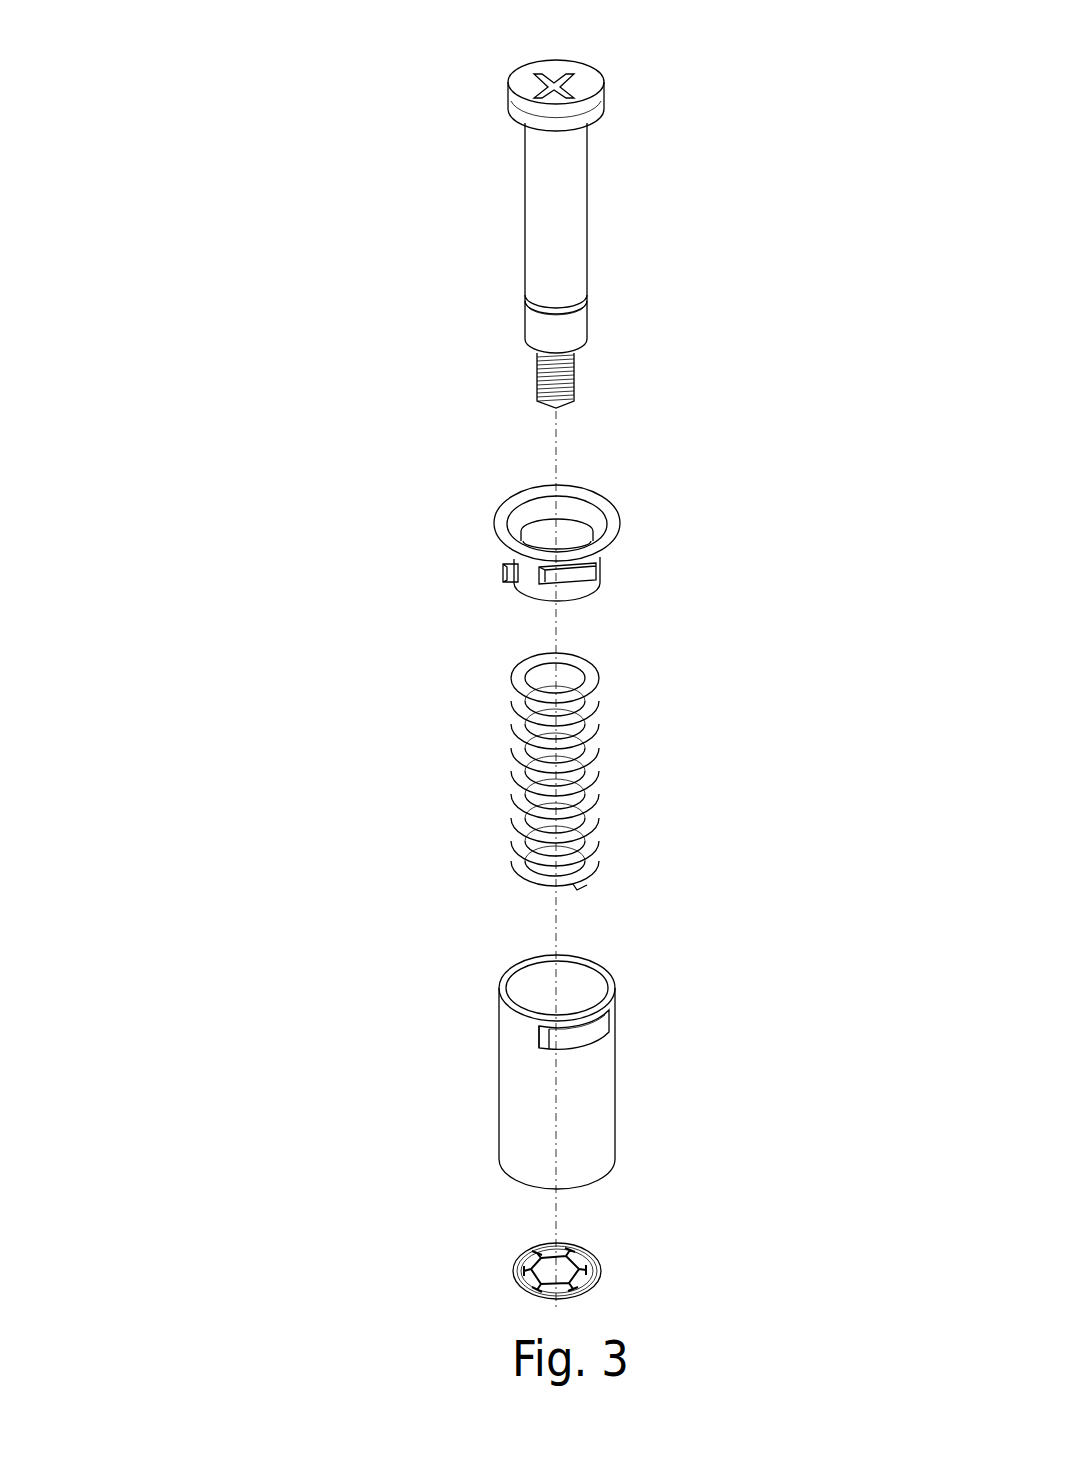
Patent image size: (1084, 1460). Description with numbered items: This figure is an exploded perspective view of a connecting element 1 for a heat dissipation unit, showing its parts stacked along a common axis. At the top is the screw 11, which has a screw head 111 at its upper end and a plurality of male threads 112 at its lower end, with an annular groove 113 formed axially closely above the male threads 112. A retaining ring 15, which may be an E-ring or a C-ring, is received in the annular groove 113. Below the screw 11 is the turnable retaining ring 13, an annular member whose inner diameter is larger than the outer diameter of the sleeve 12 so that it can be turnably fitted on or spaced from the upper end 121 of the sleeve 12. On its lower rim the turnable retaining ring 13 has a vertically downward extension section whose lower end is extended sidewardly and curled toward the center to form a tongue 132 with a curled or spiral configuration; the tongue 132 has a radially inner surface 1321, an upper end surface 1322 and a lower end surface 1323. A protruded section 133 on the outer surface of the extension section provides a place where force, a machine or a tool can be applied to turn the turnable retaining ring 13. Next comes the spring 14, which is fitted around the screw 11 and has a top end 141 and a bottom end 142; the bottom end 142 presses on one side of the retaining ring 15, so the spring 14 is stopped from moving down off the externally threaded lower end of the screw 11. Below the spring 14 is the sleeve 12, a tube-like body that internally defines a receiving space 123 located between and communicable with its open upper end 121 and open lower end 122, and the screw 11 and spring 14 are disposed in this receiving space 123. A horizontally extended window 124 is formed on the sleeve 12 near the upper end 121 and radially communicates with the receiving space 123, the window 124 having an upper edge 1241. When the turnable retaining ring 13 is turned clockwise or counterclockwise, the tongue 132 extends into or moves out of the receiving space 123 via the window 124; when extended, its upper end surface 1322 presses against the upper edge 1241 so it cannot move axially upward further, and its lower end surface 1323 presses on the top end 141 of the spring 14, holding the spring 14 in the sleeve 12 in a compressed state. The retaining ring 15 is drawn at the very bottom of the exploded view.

The connecting element 1 is at (280, 50).
The screw 11 is at (468, 226).
The screw head 111 is at (580, 86).
The male threads 112 is at (575, 396).
The annular groove 113 is at (586, 330).
The sleeve 12 is at (418, 1097).
The upper end 121 is at (505, 968).
The lower end 122 is at (592, 1188).
The receiving space 123 is at (605, 990).
The window 124 is at (612, 1048).
The upper edge 1241 is at (612, 1037).
The turnable retaining ring 13 is at (453, 494).
The tongue 132 is at (602, 590).
The protruded section 133 is at (507, 578).
The radially inner surface 1321 is at (620, 520).
The upper end surface 1322 is at (520, 515).
The lower end surface 1323 is at (497, 520).
The spring 14 is at (452, 742).
The top end 141 is at (512, 665).
The bottom end 142 is at (590, 883).
The retaining ring 15 is at (595, 1245).